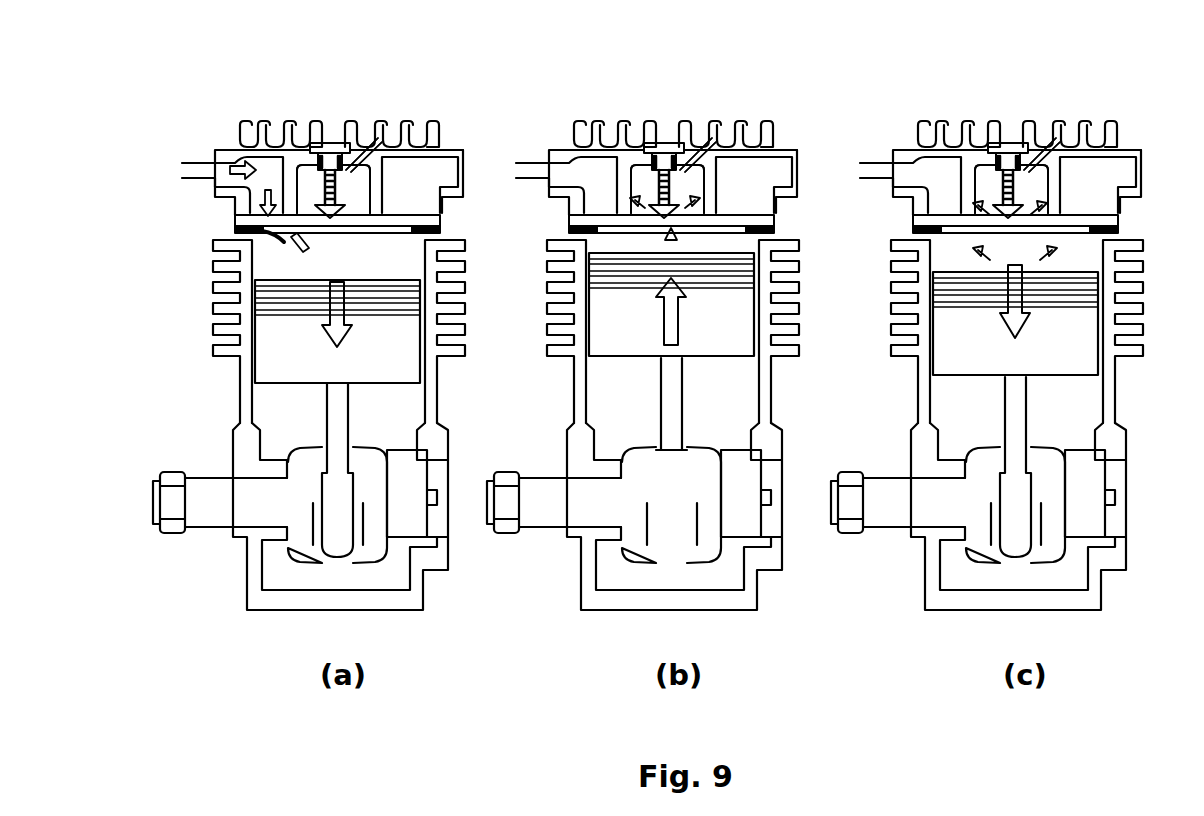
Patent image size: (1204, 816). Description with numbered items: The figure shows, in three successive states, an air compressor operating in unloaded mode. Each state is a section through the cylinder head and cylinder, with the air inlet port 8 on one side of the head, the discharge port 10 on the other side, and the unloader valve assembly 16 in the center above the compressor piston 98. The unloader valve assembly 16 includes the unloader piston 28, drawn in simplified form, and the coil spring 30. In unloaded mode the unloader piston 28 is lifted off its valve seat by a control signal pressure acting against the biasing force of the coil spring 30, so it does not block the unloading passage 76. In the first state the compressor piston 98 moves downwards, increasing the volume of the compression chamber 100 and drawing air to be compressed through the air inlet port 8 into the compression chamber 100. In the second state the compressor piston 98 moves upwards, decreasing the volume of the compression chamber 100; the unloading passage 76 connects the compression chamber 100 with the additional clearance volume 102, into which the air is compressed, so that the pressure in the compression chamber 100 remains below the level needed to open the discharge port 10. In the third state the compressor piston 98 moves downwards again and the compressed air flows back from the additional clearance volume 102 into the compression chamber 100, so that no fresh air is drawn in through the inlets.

The air inlet port 8 is at (226, 163).
The discharge port 10 is at (440, 165).
The unloader valve assembly 16 is at (334, 133).
The coil spring 30 is at (332, 195).
The unloader piston 28 is at (400, 217).
The additional clearance volume 102 is at (303, 195).
The compression chamber 100 is at (263, 259).
The compressor piston 98 is at (268, 372).
The unloading passage 76 is at (275, 297).